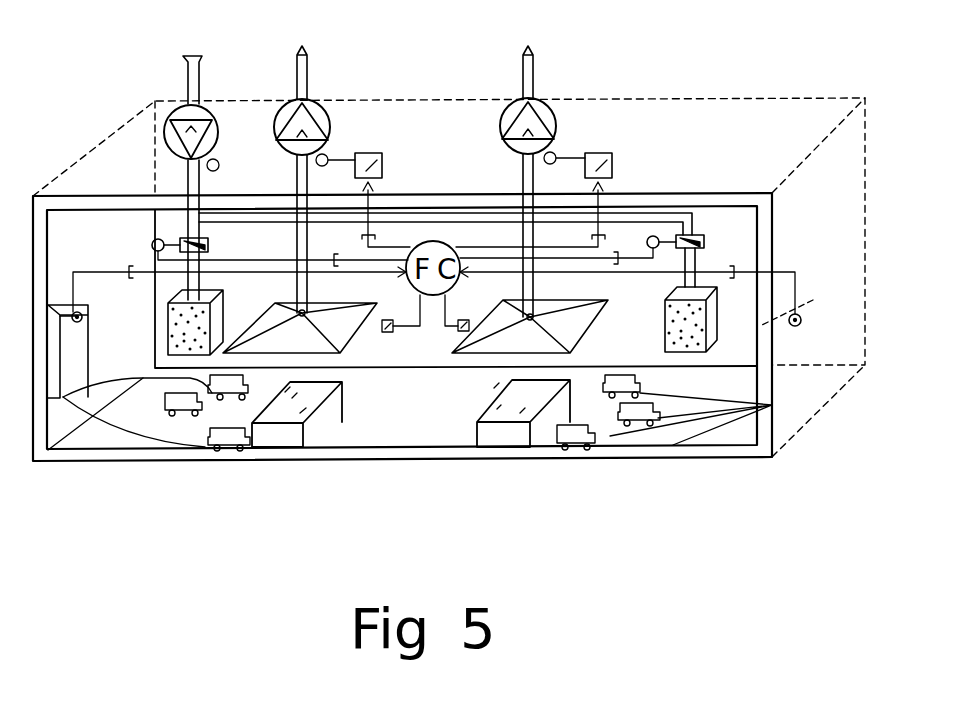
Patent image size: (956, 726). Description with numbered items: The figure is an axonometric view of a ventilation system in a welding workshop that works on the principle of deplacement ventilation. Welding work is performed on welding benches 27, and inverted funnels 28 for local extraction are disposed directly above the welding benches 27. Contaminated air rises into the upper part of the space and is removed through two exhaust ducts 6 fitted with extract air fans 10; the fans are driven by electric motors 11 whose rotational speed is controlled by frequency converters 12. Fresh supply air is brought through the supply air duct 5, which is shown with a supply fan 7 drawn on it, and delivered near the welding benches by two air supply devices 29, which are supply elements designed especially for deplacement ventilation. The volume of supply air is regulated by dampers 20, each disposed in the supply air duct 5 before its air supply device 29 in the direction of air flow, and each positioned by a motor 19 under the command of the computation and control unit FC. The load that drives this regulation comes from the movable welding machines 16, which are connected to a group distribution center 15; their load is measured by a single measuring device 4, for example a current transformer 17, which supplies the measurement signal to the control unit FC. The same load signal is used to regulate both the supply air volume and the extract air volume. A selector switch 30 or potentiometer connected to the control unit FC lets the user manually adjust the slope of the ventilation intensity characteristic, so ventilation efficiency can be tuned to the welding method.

The measuring device 4 is at (72, 314).
The supply air duct 5 is at (187, 82).
The exhaust duct 6 is at (307, 72).
The supply fan 7 is at (176, 117).
The extract air fan 10 is at (329, 118).
The electric motor 11 is at (327, 156).
The frequency converter 12 is at (382, 156).
The group distribution center 15 is at (63, 365).
The welding machine 16 is at (180, 410).
The current transformer 17 is at (76, 315).
The motor 19 is at (153, 241).
The damper 20 is at (190, 240).
The welding bench 27 is at (282, 413).
The inverted funnel 28 is at (343, 333).
The air supply device 29 is at (205, 317).
The selector switch 30 is at (387, 332).